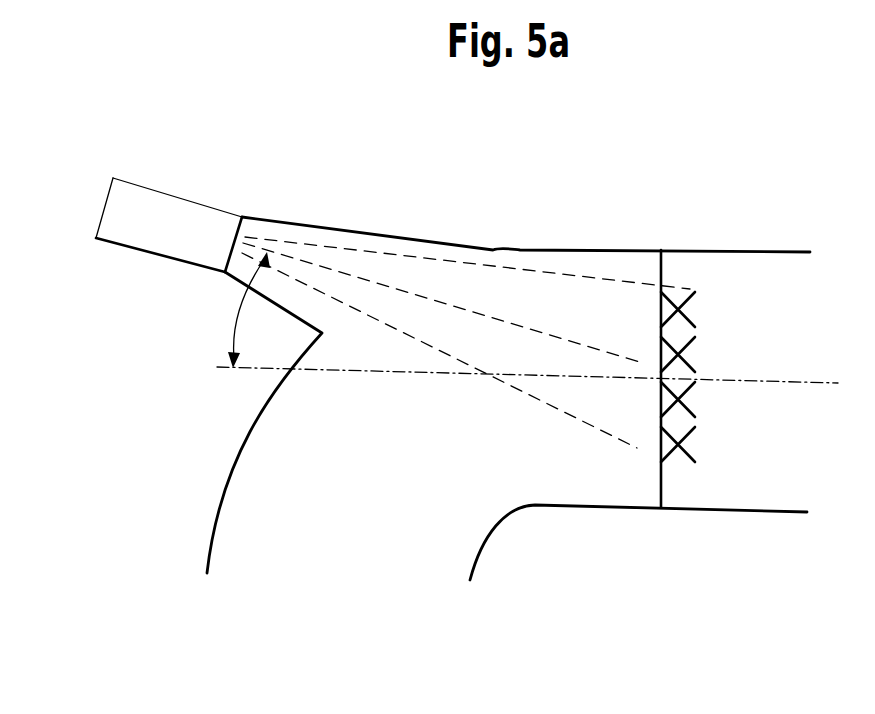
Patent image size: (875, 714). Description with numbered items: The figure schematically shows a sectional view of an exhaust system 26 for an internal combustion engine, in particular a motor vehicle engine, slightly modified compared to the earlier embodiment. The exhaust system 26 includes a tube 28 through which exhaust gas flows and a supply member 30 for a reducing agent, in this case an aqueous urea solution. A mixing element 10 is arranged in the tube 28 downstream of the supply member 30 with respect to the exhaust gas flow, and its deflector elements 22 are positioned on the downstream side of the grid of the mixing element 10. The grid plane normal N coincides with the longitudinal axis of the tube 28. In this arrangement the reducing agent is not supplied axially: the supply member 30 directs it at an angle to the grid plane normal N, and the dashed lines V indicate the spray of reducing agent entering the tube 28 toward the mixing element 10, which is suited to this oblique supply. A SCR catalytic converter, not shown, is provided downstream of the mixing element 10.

The mixing element 10 is at (671, 265).
The deflector elements 22 is at (670, 457).
The exhaust system 26 is at (648, 206).
The tube 28 is at (440, 552).
The supply member 30 is at (158, 215).
The flow direction V is at (570, 277).
The grid plane normal N is at (792, 383).